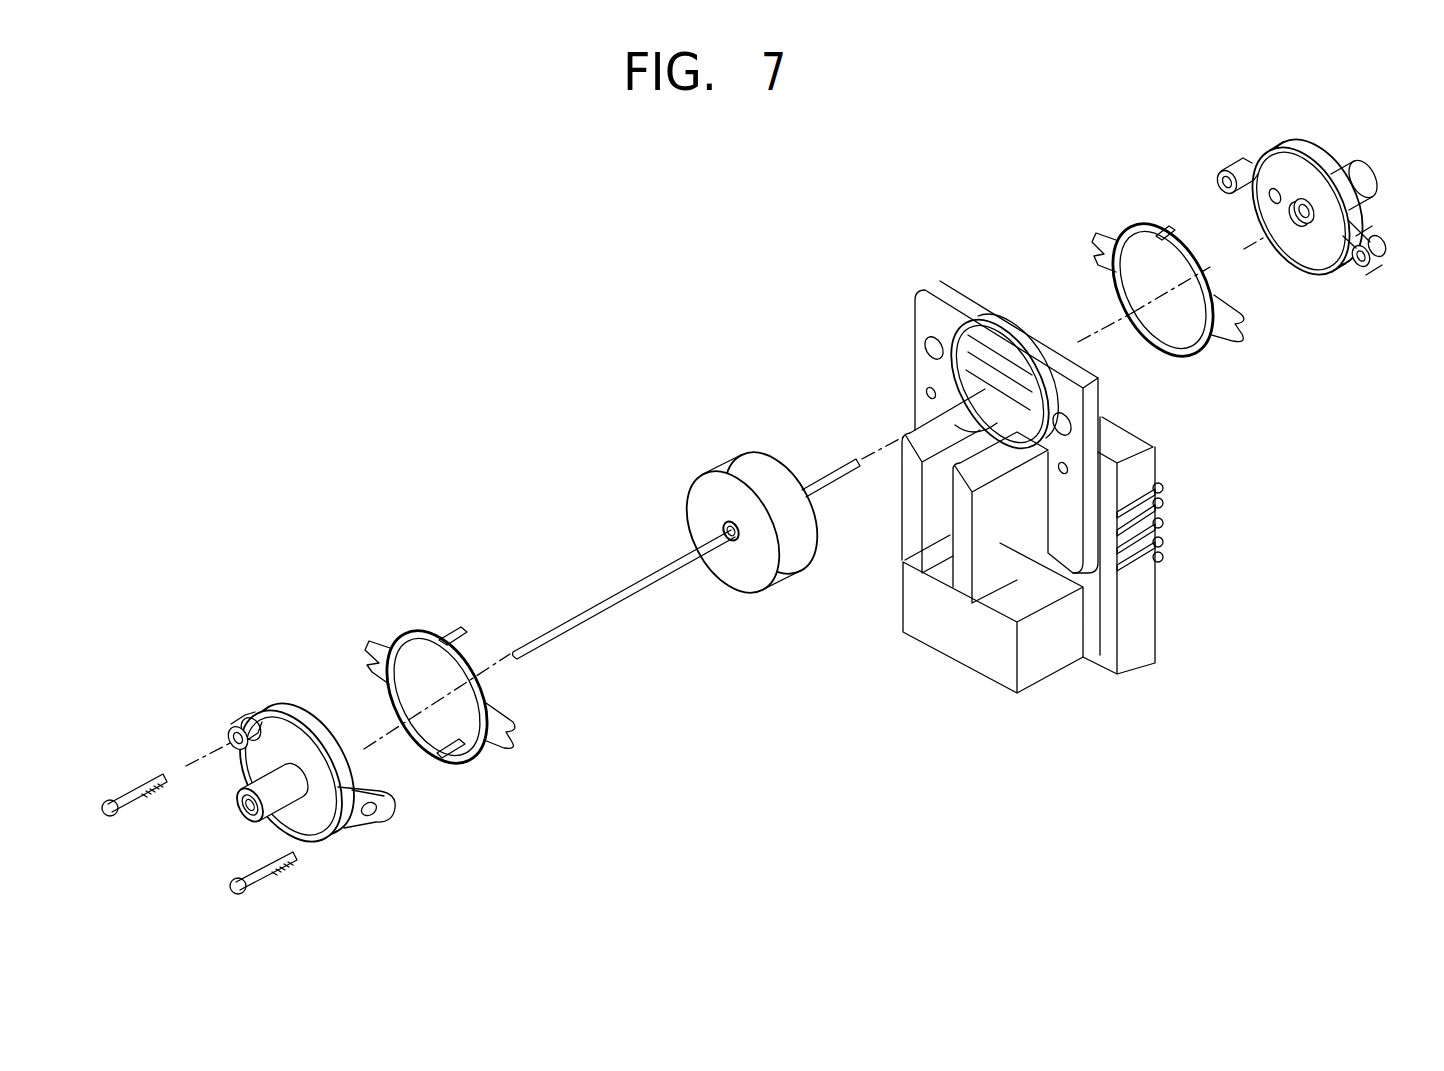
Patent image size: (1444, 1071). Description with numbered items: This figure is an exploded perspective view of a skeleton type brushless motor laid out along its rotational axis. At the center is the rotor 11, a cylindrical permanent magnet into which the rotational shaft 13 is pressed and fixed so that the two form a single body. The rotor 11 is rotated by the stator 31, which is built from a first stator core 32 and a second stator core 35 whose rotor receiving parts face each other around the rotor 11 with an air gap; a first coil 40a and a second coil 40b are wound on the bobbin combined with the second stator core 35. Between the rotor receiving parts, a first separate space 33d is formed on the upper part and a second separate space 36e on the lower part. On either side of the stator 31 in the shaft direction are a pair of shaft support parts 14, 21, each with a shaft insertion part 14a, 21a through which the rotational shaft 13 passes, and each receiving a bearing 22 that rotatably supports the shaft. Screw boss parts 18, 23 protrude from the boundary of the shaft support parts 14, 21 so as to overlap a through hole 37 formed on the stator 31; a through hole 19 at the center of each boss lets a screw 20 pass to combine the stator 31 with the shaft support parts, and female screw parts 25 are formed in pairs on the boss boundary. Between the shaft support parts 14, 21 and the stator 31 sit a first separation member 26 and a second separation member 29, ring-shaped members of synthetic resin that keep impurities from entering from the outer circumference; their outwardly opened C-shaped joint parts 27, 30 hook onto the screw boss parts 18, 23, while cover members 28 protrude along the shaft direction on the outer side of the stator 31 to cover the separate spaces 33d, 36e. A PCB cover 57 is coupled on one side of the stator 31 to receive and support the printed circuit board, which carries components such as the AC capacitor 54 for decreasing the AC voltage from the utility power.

The rotor 11 is at (738, 466).
The rotational shaft 13 is at (628, 590).
The shaft support part 14 is at (243, 628).
The shaft insertion part 14a is at (234, 800).
The screw boss part 18 is at (244, 722).
The through hole 19 is at (234, 728).
The screw 20 is at (232, 886).
The shaft support part 21 is at (1311, 201).
The shaft insertion part 21a is at (1379, 171).
The bearing 22 is at (1293, 208).
The screw boss part 23 is at (1385, 256).
The female screw part 25 is at (1353, 271).
The first separation member 26 is at (411, 600).
The joint part 27 is at (368, 648).
The cover member 28 is at (452, 625).
The second separation member 29 is at (1140, 200).
The joint part 30 is at (1096, 240).
The stator 31 is at (1020, 477).
The first stator core 32 is at (947, 286).
The first separate space 33d is at (1010, 305).
The second stator core 35 is at (1084, 358).
The second separate space 36e is at (990, 432).
The through hole 37 is at (924, 350).
The first coil 40a is at (940, 517).
The second coil 40b is at (997, 550).
The AC capacitor 54 is at (1003, 662).
The PCB cover 57 is at (1133, 645).